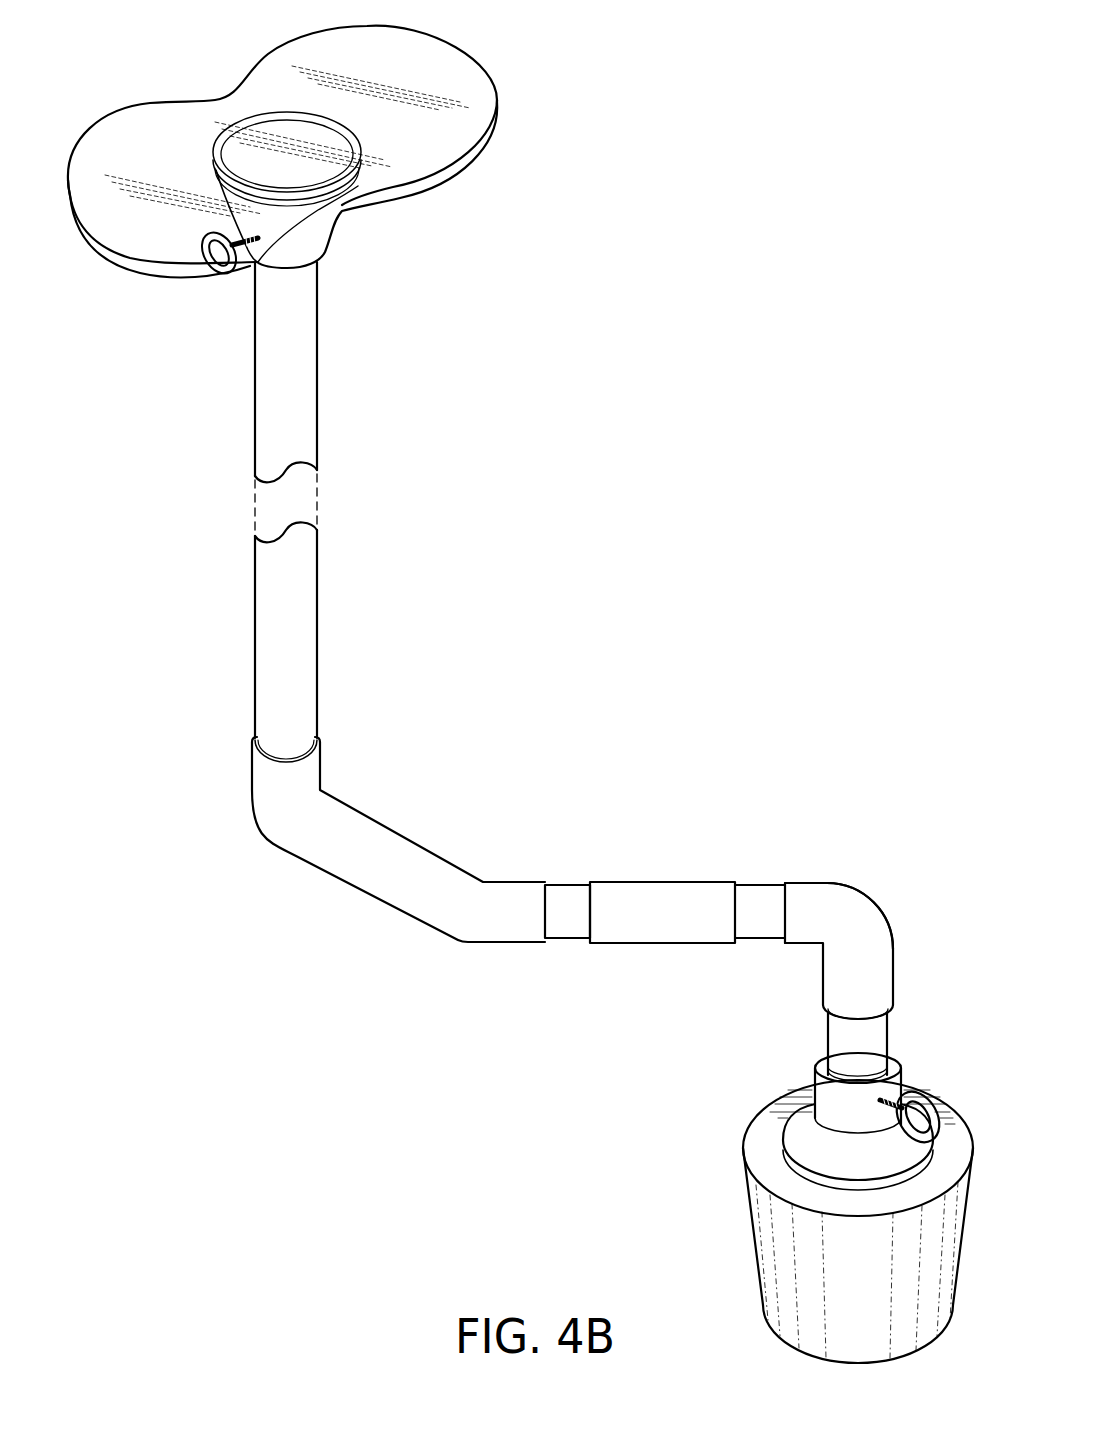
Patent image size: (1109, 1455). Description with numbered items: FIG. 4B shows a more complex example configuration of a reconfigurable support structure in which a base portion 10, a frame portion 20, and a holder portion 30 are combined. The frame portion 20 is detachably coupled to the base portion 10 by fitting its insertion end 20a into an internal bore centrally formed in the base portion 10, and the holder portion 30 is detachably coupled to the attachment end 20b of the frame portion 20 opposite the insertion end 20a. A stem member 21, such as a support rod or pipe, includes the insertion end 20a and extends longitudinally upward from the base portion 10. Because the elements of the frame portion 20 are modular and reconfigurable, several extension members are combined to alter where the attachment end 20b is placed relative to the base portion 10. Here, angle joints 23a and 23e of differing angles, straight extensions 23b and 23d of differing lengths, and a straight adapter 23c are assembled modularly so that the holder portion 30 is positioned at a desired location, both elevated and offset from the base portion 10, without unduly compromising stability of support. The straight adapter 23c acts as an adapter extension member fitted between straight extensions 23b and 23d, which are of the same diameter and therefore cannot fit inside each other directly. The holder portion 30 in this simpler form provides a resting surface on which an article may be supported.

The base portion 10 is at (708, 1204).
The frame portion 20 is at (588, 896).
The insertion end 20a is at (803, 1035).
The attachment end 20b is at (380, 285).
The stem member 21 is at (887, 1033).
The angle joint extension member 23a is at (870, 900).
The straight extension 23b is at (758, 883).
The straight adapter 23c is at (627, 944).
The straight extension 23d is at (563, 943).
The angle joint extension member 23e is at (348, 888).
The holder portion 30 is at (531, 79).